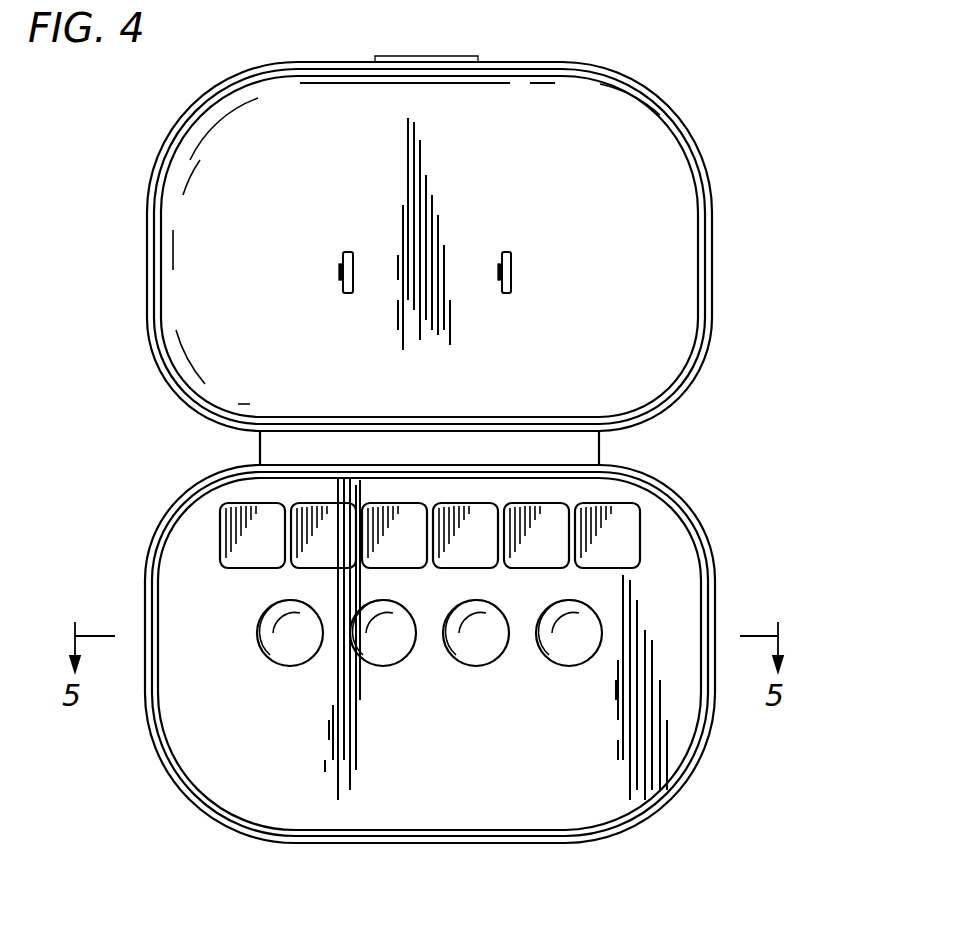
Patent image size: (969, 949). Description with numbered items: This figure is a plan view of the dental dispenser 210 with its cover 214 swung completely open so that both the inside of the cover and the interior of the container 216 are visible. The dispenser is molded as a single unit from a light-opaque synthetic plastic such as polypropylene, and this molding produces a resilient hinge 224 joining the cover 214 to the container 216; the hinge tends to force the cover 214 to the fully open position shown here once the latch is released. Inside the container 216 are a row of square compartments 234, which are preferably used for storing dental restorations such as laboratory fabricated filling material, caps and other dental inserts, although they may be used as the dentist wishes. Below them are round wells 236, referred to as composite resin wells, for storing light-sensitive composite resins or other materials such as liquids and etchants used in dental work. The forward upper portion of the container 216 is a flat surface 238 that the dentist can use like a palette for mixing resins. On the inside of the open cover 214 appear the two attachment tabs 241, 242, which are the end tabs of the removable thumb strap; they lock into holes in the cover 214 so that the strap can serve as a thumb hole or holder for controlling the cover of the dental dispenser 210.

The dental dispenser 210 is at (680, 112).
The cover 214 is at (716, 250).
The resilient hinge 224 is at (602, 446).
The container 216 is at (703, 522).
The compartments 234 is at (640, 548).
The wells 236 is at (580, 656).
The flat surface 238 is at (672, 712).
The attachment tab 241 is at (507, 252).
The attachment tab 242 is at (349, 250).